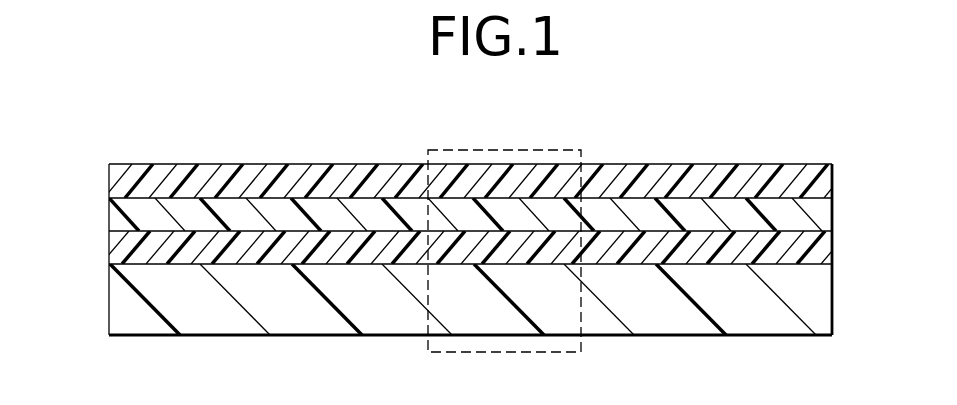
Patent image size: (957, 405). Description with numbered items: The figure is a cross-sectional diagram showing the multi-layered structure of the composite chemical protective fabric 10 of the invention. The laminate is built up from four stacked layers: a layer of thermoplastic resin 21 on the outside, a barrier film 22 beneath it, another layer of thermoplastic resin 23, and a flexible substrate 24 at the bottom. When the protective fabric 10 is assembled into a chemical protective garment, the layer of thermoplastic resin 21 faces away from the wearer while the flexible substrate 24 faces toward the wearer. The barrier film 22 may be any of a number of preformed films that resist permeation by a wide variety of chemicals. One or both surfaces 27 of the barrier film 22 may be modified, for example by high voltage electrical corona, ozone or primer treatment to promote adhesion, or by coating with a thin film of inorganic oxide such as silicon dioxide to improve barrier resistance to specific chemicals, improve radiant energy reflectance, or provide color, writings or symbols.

The composite chemical protective fabric 10 is at (536, 143).
The layer of thermoplastic resin 21 is at (109, 179).
The barrier film 22 is at (833, 215).
The layer of thermoplastic resin 23 is at (109, 252).
The flexible substrate 24 is at (833, 302).
The surfaces of the barrier film 27 is at (126, 228).